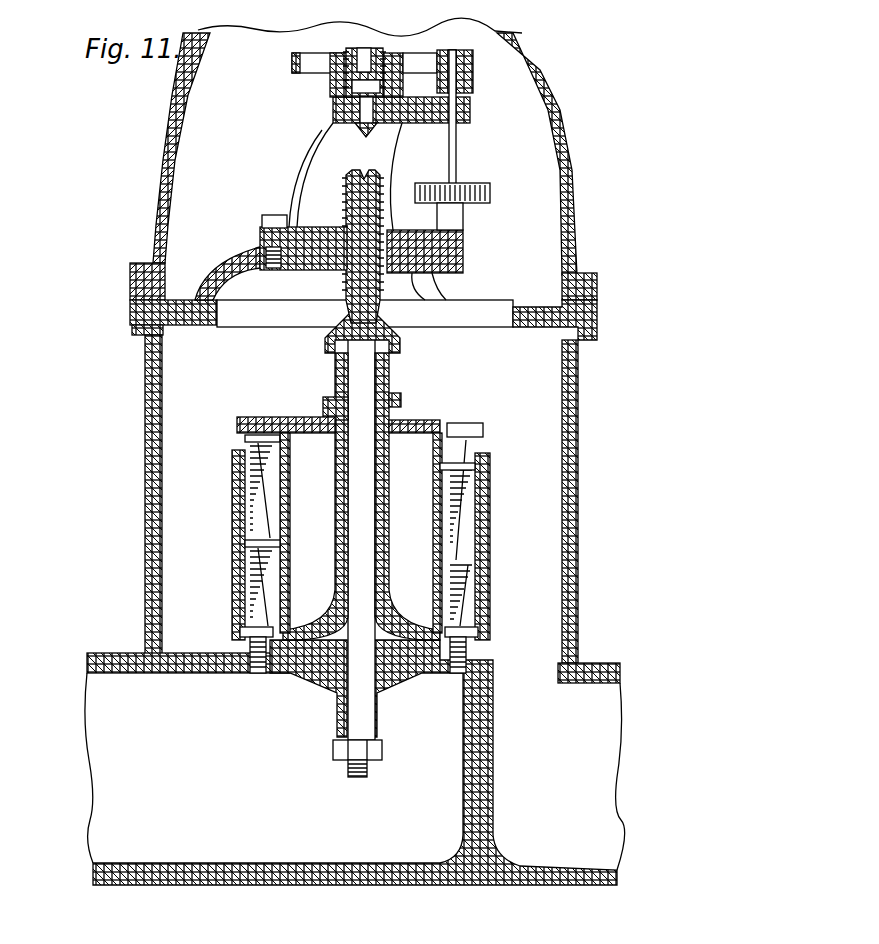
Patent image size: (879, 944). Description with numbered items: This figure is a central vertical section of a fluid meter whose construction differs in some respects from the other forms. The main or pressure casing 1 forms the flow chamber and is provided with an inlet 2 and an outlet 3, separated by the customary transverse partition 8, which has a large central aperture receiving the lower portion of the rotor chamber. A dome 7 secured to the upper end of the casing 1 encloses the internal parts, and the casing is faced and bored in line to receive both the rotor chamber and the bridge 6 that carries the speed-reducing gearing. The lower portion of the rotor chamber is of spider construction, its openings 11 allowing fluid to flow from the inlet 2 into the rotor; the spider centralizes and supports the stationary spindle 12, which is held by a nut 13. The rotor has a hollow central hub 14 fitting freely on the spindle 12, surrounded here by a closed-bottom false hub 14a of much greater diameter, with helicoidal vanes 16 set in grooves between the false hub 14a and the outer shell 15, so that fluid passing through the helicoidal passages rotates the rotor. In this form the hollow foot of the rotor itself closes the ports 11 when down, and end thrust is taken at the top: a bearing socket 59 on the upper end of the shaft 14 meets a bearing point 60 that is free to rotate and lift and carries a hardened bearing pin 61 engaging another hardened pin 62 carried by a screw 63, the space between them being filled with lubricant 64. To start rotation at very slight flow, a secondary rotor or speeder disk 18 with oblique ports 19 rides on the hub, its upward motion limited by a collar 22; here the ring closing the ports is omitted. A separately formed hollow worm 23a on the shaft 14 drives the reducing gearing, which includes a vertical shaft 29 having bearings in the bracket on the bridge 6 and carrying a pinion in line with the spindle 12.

The main casing 1 is at (145, 430).
The inlet 2 is at (187, 758).
The outlet 3 is at (601, 776).
The bridge 6 is at (243, 262).
The dome 7 is at (566, 153).
The transverse partition 8 is at (480, 700).
The openings 11 is at (400, 677).
The spindle 12 is at (388, 381).
The nut 13 is at (374, 754).
The central hub 14 is at (389, 508).
The false hub 14a is at (288, 572).
The outer shell 15 is at (250, 504).
The helicoidal vanes 16 is at (263, 528).
The speeder disk 18 is at (414, 423).
The oblique ports 19 is at (304, 427).
The collar 22 is at (333, 340).
The worm 23a is at (346, 196).
The vertical shaft 29 is at (456, 163).
The bearing socket 59 is at (362, 175).
The bearing point 60 is at (367, 130).
The hardened bearing pin 61 is at (333, 108).
The hardened pin 62 is at (330, 80).
The screw 63 is at (352, 52).
The lubricant 64 is at (398, 86).